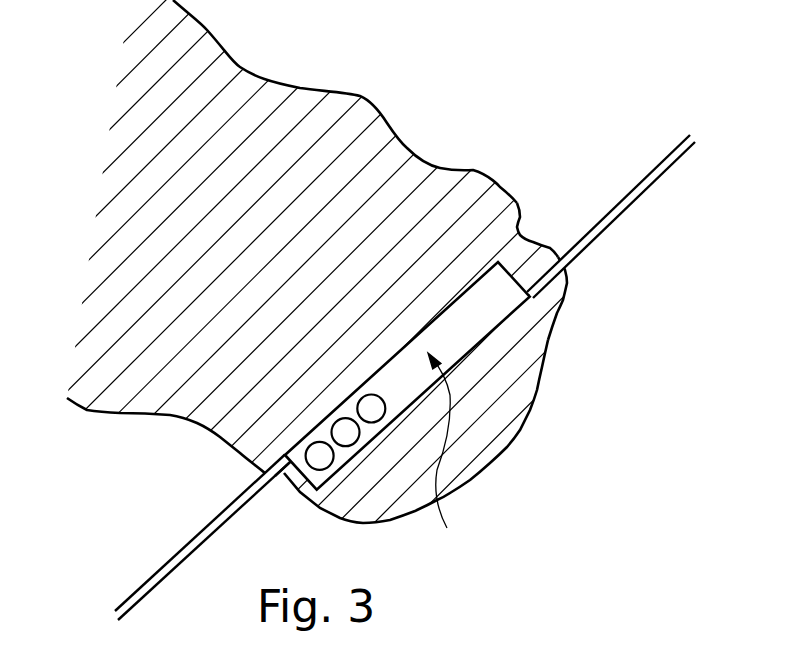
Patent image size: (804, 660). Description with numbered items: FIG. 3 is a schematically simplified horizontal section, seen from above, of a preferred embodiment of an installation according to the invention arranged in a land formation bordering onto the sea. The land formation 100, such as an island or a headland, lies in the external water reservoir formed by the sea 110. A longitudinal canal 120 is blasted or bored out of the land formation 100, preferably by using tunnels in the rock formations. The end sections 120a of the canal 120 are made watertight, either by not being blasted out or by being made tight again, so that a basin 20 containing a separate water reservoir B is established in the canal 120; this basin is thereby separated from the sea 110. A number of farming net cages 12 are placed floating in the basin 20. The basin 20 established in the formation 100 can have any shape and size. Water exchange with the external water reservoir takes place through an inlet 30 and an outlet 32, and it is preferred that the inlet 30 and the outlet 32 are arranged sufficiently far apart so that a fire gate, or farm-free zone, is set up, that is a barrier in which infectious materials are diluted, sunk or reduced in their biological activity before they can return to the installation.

The land formation 100 is at (118, 393).
The sea 110 is at (368, 101).
The longitudinal canal 120 is at (527, 247).
The end sections 120a is at (565, 280).
The farming net cage 12 is at (297, 477).
The basin 20 is at (480, 322).
The inlet 30 is at (144, 588).
The outlet 32 is at (640, 198).
The water reservoir B is at (442, 454).